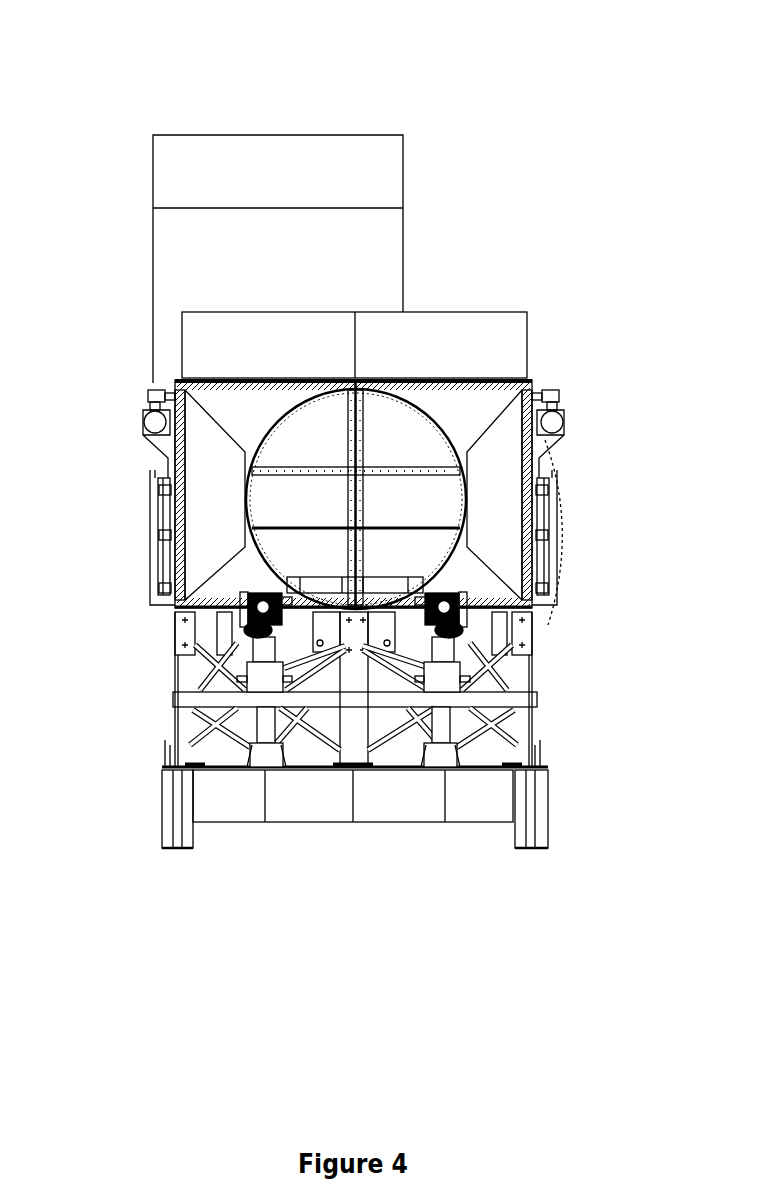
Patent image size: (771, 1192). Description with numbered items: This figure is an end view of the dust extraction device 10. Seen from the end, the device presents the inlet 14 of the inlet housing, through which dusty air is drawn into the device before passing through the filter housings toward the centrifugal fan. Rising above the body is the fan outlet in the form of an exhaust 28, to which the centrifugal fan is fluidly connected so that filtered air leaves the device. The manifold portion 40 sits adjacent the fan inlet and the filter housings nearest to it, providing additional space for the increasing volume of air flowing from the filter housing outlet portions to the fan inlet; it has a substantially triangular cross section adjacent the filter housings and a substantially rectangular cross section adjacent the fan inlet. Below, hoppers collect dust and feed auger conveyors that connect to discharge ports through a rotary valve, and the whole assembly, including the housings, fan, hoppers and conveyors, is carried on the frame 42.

The dust extraction device 10 is at (563, 92).
The inlet 14 is at (510, 505).
The exhaust 28 is at (386, 255).
The manifold portion 40 is at (545, 288).
The frame 42 is at (317, 808).